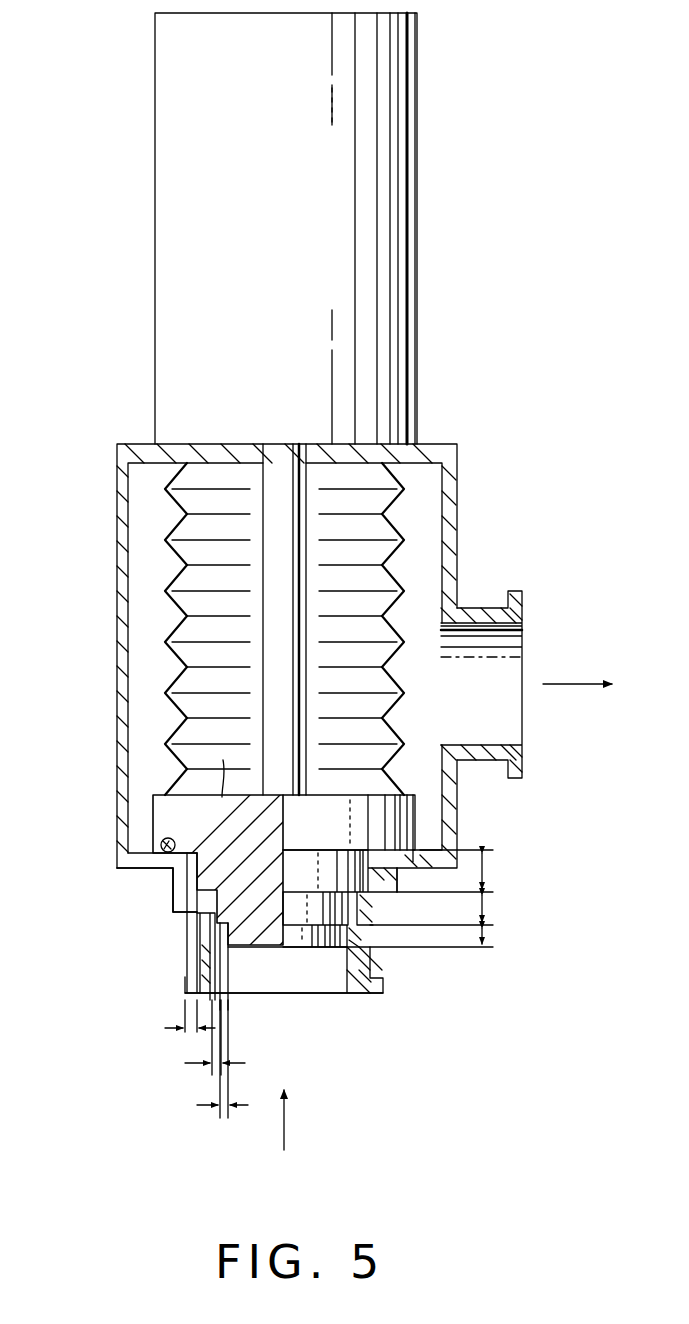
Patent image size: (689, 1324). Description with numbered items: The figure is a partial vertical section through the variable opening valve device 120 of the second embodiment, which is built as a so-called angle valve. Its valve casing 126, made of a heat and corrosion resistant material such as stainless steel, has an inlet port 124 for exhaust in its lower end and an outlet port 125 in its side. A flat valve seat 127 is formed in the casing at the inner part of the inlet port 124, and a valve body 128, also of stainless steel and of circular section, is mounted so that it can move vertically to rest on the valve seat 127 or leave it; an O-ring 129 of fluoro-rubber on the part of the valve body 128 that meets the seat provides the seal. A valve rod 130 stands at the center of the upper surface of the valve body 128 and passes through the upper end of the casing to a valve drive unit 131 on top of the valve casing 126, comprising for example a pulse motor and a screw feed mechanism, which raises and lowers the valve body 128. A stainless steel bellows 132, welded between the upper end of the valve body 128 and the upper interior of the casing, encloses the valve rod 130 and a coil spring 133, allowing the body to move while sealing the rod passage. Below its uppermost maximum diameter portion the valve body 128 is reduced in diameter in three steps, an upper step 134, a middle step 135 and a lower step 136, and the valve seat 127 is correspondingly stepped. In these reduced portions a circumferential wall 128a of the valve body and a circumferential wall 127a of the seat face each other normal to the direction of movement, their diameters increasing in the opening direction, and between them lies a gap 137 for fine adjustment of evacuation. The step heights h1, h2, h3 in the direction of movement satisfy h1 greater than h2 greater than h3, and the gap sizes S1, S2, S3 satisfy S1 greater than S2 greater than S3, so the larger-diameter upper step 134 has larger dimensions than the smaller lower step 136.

The variable opening valve device 120 is at (478, 413).
The inlet port 124 is at (253, 980).
The outlet port 125 is at (522, 656).
The valve casing 126 is at (117, 603).
The valve seat 127 is at (147, 845).
The circumferential wall 127a is at (172, 893).
The valve body 128 is at (153, 806).
The circumferential wall 128a is at (190, 913).
The O-ring 129 is at (164, 852).
The valve rod 130 is at (290, 662).
The valve drive unit 131 is at (418, 116).
The bellows 132 is at (397, 522).
The coil spring 133 is at (417, 813).
The upper step 134 is at (330, 845).
The middle step 135 is at (302, 913).
The lower step 136 is at (325, 915).
The gap for fine adjustment of evacuation 137 is at (176, 745).
The height of upper step h1 is at (488, 870).
The height of middle step h2 is at (488, 908).
The height of lower step h3 is at (488, 937).
The gap size of upper step S1 is at (188, 1032).
The gap size of middle step S2 is at (210, 1075).
The gap size of lower step S3 is at (223, 1118).